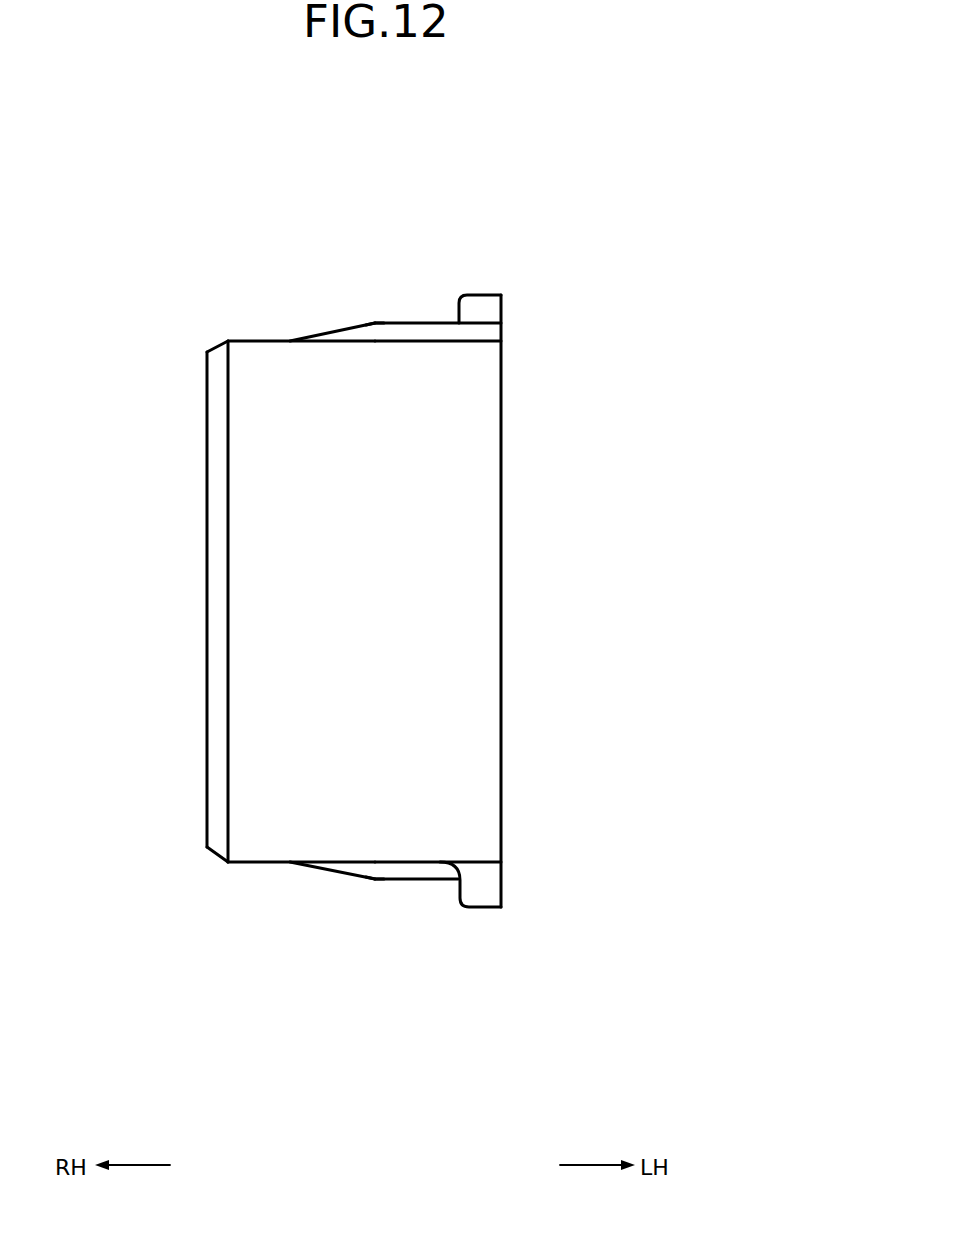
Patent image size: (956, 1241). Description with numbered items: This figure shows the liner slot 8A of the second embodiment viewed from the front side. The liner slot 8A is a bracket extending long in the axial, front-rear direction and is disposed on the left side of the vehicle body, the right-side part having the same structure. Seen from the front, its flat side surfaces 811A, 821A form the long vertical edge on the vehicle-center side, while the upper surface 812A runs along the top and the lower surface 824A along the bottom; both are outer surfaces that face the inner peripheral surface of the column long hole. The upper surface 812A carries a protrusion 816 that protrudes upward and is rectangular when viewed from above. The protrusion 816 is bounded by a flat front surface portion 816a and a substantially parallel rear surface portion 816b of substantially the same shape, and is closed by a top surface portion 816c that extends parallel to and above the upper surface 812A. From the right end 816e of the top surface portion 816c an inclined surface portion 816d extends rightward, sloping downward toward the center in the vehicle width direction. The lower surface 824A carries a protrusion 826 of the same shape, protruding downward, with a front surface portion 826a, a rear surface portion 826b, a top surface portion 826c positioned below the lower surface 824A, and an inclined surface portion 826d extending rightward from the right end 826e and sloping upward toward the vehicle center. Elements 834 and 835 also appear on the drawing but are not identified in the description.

The liner slot 8A is at (576, 257).
The side surface 811A is at (594, 601).
The side surface 821A is at (501, 445).
The upper surface 812A is at (258, 341).
The lower surface 824A is at (257, 863).
The protrusion 816 is at (401, 298).
The front surface portion 816a is at (449, 235).
The rear surface portion 816b is at (420, 333).
The top surface portion 816c is at (438, 323).
The inclined surface portion 816d is at (343, 329).
The right end 816e is at (375, 323).
The upper projection 834 is at (483, 303).
The lower projection 835 is at (480, 898).
The protrusion 826 is at (342, 889).
The front surface portion 826a is at (403, 869).
The rear surface portion 826b is at (431, 999).
The top surface portion 826c is at (428, 880).
The inclined surface portion 826d is at (325, 870).
The right end 826e is at (375, 880).